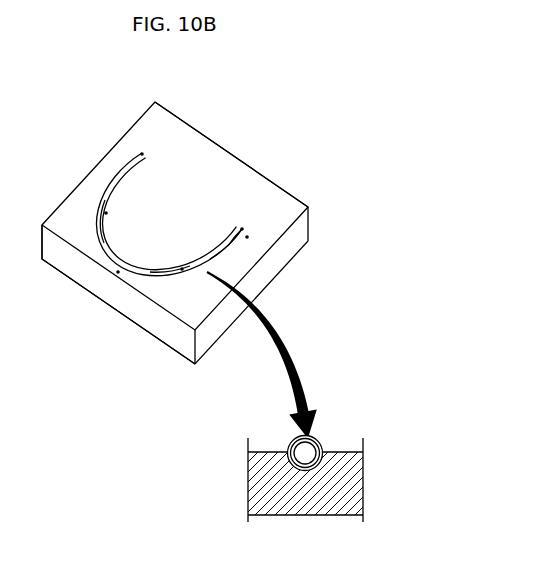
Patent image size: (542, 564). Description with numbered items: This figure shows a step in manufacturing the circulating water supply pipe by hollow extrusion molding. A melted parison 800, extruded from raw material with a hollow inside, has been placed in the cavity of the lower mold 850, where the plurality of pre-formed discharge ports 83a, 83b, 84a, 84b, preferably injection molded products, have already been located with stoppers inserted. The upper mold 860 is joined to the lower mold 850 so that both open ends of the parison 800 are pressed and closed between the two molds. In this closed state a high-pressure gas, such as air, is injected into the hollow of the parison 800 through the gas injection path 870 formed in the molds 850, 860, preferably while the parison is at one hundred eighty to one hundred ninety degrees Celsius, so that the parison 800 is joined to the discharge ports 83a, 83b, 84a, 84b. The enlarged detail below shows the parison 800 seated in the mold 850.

The parison 800 is at (247, 237).
The lower mold 850 is at (348, 472).
The upper mold 860 is at (220, 177).
The gas injection path 870 is at (118, 273).
The discharge port 83a is at (142, 153).
The discharge port 83b is at (106, 213).
The discharge port 84a is at (242, 228).
The discharge port 84b is at (182, 270).